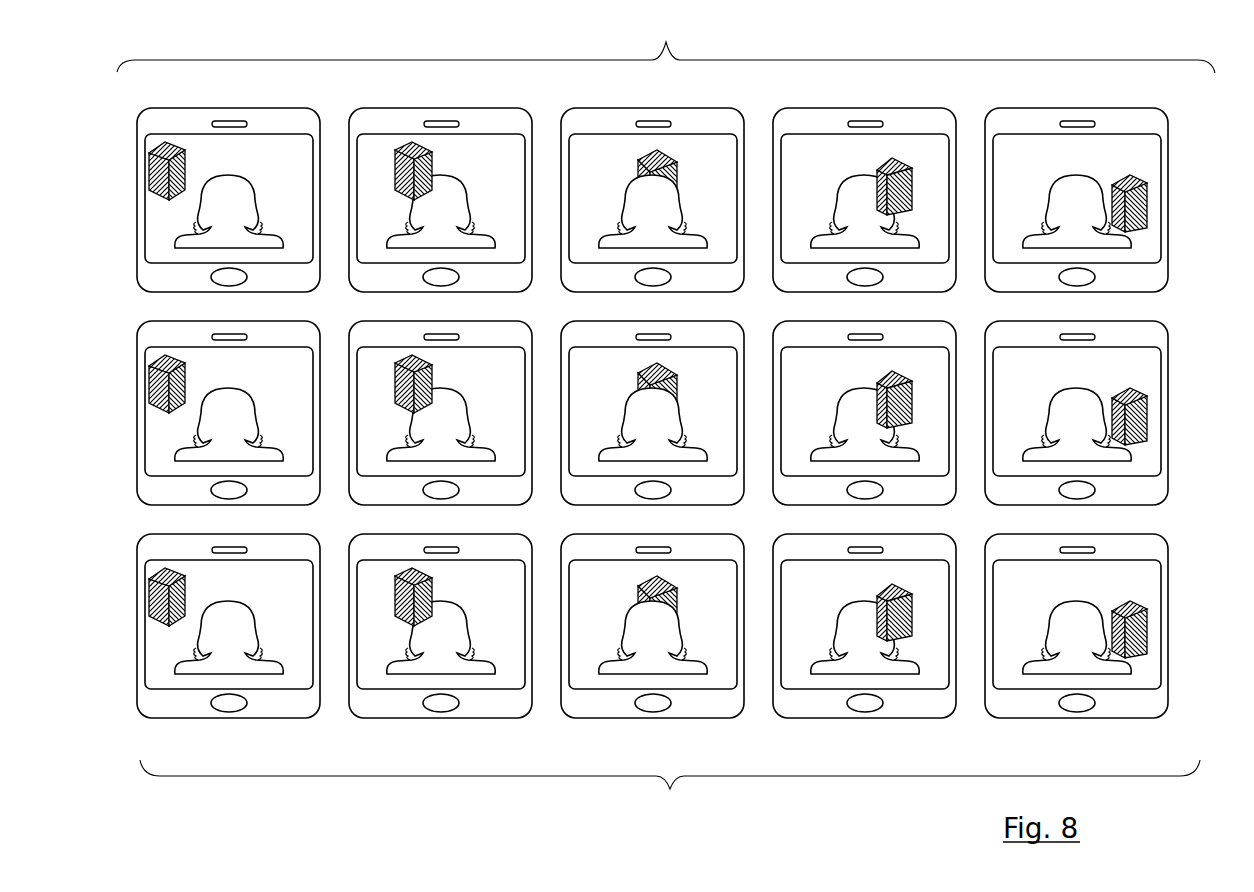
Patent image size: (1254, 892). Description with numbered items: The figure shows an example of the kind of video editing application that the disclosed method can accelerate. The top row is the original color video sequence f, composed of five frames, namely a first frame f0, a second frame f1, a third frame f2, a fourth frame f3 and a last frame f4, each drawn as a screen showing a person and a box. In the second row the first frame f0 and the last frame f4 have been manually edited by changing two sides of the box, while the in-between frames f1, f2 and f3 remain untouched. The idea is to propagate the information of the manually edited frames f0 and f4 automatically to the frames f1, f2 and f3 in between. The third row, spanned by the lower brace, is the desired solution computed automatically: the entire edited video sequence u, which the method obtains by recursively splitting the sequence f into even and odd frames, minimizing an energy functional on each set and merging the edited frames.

The first frame f0 is at (268, 120).
The second frame f1 is at (497, 120).
The third frame f2 is at (718, 120).
The fourth frame f3 is at (938, 120).
The last frame f4 is at (1165, 120).
The video sequence f is at (666, 44).
The edited video sequence u is at (670, 790).